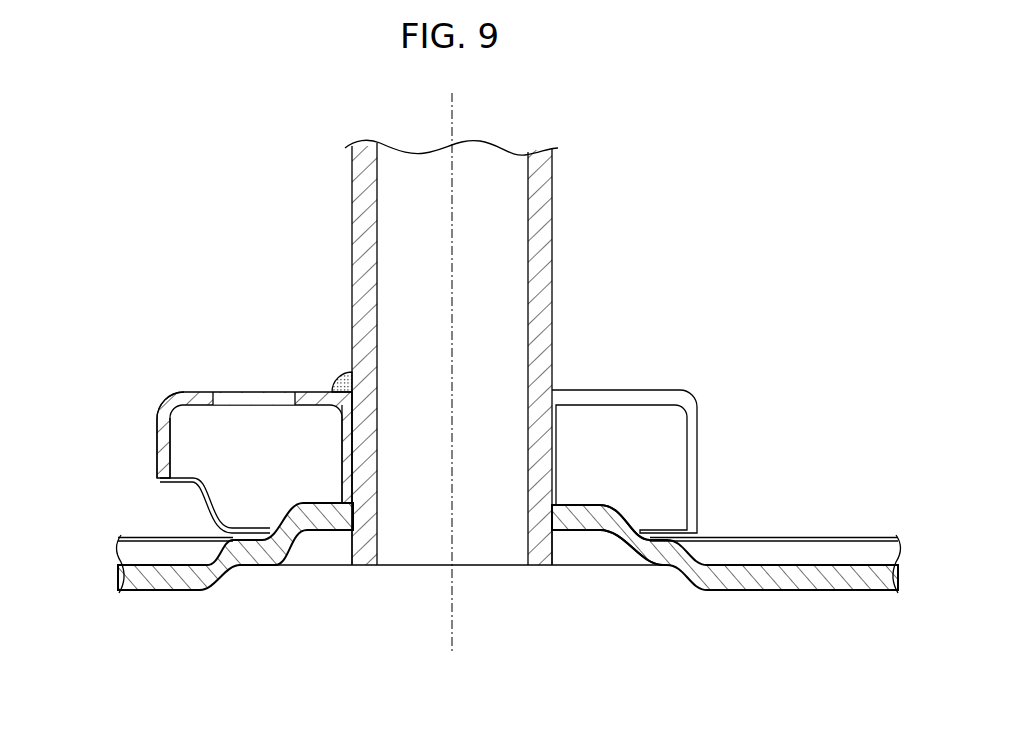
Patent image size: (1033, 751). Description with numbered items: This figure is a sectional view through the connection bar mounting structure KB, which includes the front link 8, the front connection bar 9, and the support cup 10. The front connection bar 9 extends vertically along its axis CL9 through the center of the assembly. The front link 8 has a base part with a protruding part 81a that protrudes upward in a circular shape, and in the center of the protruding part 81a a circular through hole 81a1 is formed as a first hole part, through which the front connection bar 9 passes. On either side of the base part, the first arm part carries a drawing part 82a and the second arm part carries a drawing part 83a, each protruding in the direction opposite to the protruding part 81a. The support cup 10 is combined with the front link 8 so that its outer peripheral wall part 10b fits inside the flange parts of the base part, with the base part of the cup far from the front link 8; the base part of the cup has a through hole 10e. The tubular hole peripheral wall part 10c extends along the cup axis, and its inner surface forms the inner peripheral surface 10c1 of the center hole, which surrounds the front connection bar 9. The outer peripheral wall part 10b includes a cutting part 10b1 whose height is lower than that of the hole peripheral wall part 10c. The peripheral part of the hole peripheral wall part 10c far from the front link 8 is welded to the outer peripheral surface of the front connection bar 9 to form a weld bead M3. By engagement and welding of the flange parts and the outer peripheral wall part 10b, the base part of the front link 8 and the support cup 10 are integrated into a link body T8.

The axis of the front connection bar CL9 is at (453, 125).
The front connection bar 9 is at (552, 240).
The connection bar mounting structure KB is at (668, 346).
The front link 8 is at (505, 575).
The drawing part 82a is at (164, 563).
The drawing part 83a is at (819, 563).
The protruding part 81a is at (560, 516).
The through hole 81a1 is at (560, 516).
The support cup 10 is at (233, 470).
The through hole 10e is at (230, 398).
The outer peripheral wall part 10b is at (157, 428).
The cutting part 10b1 is at (165, 486).
The hole peripheral wall part 10c is at (350, 450).
The inner peripheral surface 10c1 is at (350, 450).
The weld bead M3 is at (347, 373).
The link body T8 is at (139, 391).